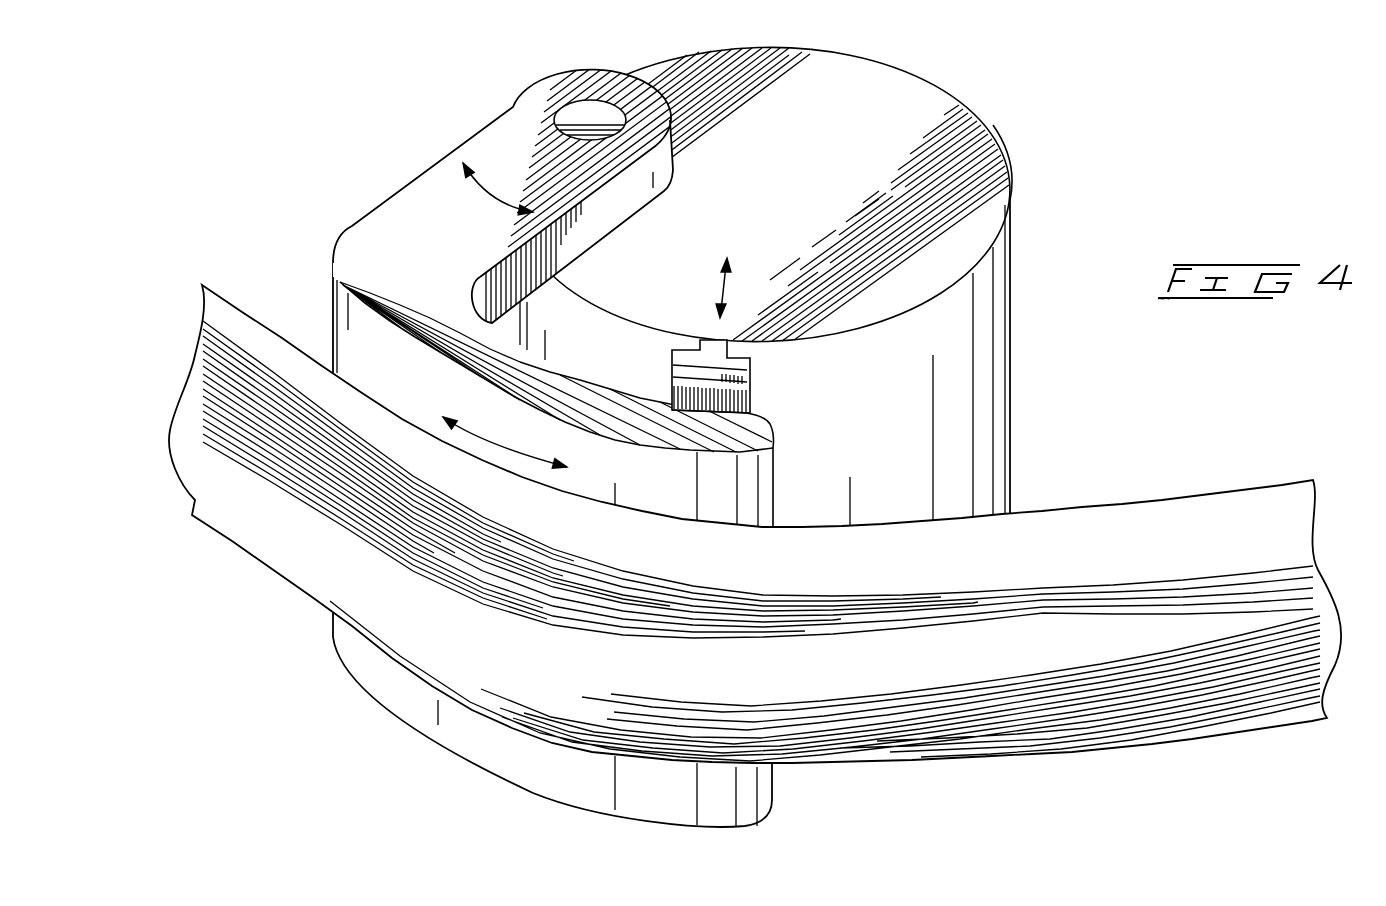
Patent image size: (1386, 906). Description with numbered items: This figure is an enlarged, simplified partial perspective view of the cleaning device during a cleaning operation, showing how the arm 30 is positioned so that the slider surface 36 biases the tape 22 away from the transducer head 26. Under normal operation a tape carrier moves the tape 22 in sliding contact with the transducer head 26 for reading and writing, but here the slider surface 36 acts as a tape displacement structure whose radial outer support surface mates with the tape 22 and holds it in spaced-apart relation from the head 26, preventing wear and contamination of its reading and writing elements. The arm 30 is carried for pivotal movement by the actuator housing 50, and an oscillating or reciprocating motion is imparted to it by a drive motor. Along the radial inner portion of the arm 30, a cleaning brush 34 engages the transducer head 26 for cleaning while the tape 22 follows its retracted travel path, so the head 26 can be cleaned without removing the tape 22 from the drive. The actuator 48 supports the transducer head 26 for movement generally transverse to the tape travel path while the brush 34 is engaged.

The tape 22 is at (1104, 545).
The transducer head 26 is at (747, 365).
The arm 30 is at (397, 230).
The cleaning brush 34 is at (669, 392).
The slider surface 36 is at (546, 760).
The actuator 48 is at (1005, 141).
The actuator housing 50 is at (825, 87).